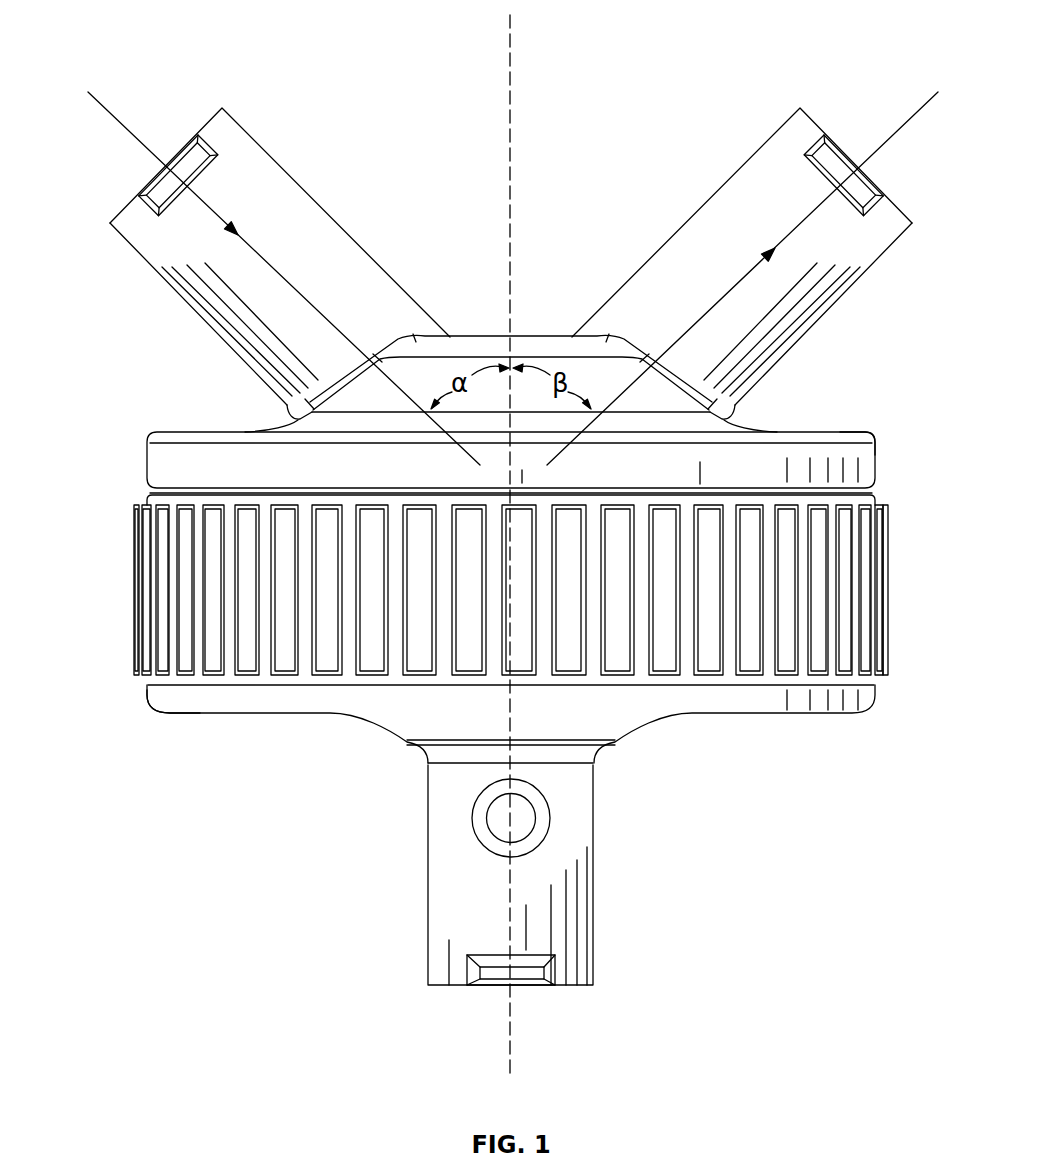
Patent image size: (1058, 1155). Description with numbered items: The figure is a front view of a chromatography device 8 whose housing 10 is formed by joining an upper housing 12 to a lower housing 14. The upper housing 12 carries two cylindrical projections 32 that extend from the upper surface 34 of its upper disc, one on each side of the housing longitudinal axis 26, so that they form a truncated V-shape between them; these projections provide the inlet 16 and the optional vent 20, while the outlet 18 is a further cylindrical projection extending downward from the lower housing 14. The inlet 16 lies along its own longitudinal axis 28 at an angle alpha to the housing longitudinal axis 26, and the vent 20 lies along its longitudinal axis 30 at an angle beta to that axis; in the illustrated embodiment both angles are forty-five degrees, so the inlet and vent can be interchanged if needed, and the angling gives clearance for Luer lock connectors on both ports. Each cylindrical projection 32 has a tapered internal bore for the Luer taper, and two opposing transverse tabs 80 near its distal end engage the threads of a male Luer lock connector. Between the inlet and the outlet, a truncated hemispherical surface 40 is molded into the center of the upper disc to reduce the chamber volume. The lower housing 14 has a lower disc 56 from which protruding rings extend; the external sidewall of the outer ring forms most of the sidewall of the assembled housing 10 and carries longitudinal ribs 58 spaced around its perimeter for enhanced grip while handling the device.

The chromatography device 8 is at (98, 410).
The housing 10 is at (134, 578).
The upper housing 12 is at (876, 456).
The lower housing 14 is at (876, 700).
The inlet 16 is at (133, 204).
The outlet 18 is at (456, 985).
The vent 20 is at (895, 212).
The longitudinal axis 26 is at (507, 77).
The longitudinal axis of the inlet 28 is at (93, 93).
The longitudinal axis of the vent 30 is at (931, 99).
The cylindrical projection 32 is at (203, 318).
The upper surface 34 is at (818, 433).
The truncated hemispherical surface 40 is at (528, 362).
The lower disc 56 is at (175, 703).
The longitudinal ribs 58 is at (887, 580).
The transverse tabs 80 is at (216, 140).